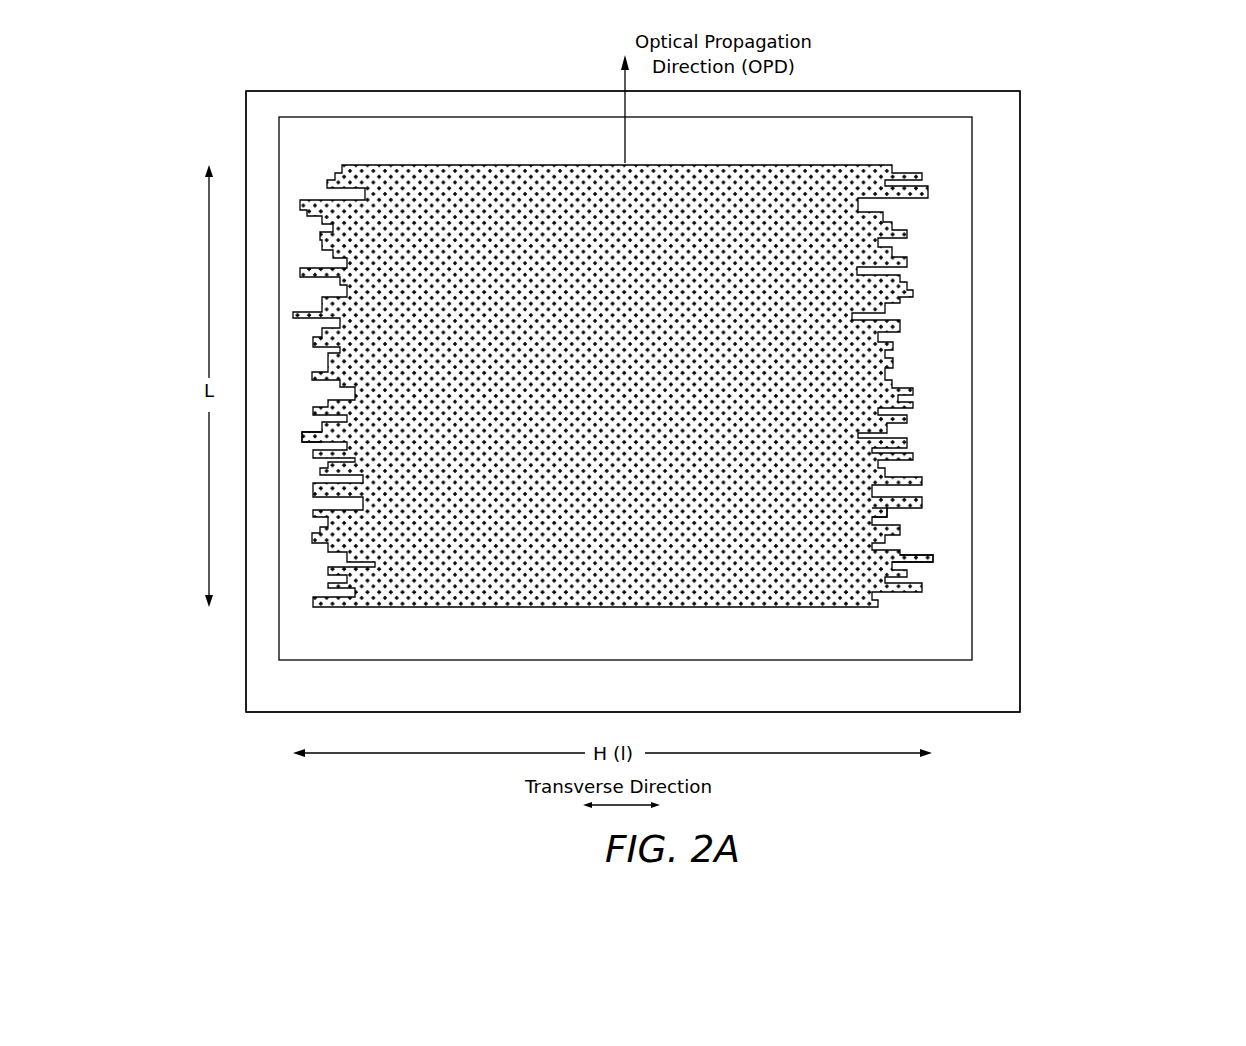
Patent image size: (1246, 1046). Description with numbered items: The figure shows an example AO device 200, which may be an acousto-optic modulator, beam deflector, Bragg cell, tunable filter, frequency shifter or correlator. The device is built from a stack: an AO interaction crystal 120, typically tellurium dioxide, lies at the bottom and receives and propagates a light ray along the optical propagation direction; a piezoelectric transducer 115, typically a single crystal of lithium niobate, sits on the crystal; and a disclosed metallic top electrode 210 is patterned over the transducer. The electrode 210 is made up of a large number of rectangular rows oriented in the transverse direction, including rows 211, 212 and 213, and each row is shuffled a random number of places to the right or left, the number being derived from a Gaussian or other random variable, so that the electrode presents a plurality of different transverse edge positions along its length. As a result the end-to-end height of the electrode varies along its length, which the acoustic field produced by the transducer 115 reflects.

The AO device 200 is at (212, 106).
The AO interaction crystal 120 is at (995, 125).
The piezoelectric transducer 115 is at (955, 200).
The top electrode 210 is at (908, 345).
The row 213 is at (305, 433).
The row 212 is at (893, 520).
The row 211 is at (928, 564).